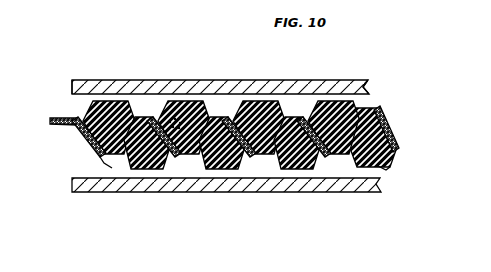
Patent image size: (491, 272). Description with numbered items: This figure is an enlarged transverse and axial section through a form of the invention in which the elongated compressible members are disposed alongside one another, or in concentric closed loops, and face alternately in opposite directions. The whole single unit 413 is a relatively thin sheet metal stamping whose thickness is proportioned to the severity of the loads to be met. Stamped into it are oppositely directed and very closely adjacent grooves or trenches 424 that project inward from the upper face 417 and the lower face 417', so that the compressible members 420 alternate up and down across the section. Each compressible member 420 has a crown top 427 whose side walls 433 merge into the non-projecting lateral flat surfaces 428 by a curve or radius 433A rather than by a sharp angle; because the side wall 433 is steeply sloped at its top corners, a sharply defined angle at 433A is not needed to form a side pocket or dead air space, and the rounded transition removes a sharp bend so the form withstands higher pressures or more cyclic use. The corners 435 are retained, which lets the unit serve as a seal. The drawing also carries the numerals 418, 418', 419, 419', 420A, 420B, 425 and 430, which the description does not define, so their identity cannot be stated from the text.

The single unit 413 is at (56, 115).
The upper face 417 is at (409, 126).
The lower face 417' is at (58, 137).
The face sheet edge 418 is at (44, 86).
The face sheet edge 418' is at (71, 161).
The upper face sheet 419 is at (220, 71).
The lower face sheet 419' is at (203, 195).
The compressible member 420 is at (183, 169).
The adhesive fillet 420A is at (176, 118).
The core web 420B is at (154, 173).
The grooves or trenches 424 is at (122, 166).
The core cell block 425 is at (298, 169).
The crown top 427 is at (183, 101).
The lateral flat surfaces 428 is at (236, 101).
The core web 430 is at (180, 168).
The side wall 433 is at (368, 83).
The curve or radius 433A is at (352, 107).
The corners 435 is at (378, 167).